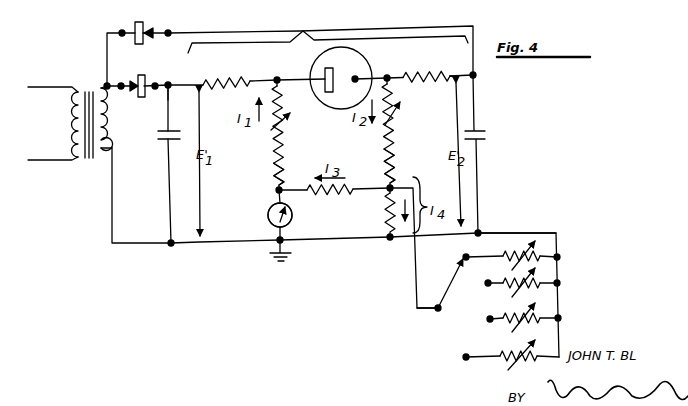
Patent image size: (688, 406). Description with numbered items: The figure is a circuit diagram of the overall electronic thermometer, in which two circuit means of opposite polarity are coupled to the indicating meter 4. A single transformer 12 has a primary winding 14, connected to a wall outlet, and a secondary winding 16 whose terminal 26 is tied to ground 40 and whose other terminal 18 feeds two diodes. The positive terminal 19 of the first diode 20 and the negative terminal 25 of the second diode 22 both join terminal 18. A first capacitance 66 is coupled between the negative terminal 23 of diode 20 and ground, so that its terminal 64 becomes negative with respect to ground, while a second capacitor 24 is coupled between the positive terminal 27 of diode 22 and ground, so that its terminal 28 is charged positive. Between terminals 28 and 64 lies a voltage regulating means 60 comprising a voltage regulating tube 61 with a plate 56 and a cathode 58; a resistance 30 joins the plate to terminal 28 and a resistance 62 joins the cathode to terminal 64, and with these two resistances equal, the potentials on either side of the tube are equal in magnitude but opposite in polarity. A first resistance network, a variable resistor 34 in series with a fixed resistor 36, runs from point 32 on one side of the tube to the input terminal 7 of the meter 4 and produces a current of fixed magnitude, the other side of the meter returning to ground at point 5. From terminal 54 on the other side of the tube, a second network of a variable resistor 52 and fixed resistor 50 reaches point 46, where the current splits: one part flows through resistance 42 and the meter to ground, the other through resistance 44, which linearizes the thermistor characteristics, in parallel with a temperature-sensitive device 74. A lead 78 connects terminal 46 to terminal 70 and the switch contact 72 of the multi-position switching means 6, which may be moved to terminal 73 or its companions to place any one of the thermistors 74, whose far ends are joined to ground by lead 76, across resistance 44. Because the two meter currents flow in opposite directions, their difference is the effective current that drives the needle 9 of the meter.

The meter 4 is at (268, 216).
The junction node 5 is at (282, 243).
The multi-position switching means 6 is at (445, 337).
The input terminal of the meter 7 is at (277, 191).
The needle 9 is at (292, 216).
The transformer 12 is at (84, 148).
The primary winding 14 is at (68, 133).
The secondary winding 16 is at (113, 130).
The terminal of the secondary winding 18 is at (104, 84).
The positive terminal of rectifying means 20 19 is at (120, 33).
The diode 20 is at (136, 22).
The diode 22 is at (141, 75).
The negative terminal of rectifying means 20 23 is at (170, 32).
The capacitor 24 is at (180, 140).
The negative terminal of rectifying means 22 25 is at (121, 84).
The terminal of the secondary winding 26 is at (171, 246).
The positive terminal of rectifying means 22 27 is at (157, 85).
The terminal of capacitance means 24 28 is at (169, 92).
The resistance 30 is at (245, 76).
The terminal 32 is at (276, 78).
The variable resistor 34 is at (272, 132).
The fixed resistor 36 is at (275, 164).
The ground 40 is at (273, 265).
The resistance 42 is at (355, 186).
The resistance 44 is at (385, 225).
The terminal 46 is at (385, 200).
The fixed resistor 50 is at (396, 152).
The variable resistor 52 is at (400, 117).
The terminal 54 is at (404, 74).
The plate 56 is at (329, 68).
The cathode 58 is at (355, 79).
The voltage regulating means 60 is at (303, 31).
The voltage regulating tube 61 is at (344, 84).
The resistance 62 is at (453, 75).
The terminal of capacitance means 66 64 is at (476, 75).
The capacitance 66 is at (486, 137).
The terminal 70 is at (436, 311).
The switch contact 72 is at (457, 278).
The terminal 73 is at (464, 256).
The temperature-sensitive device 74 is at (541, 255).
The lead 76 is at (512, 233).
The lead 78 is at (413, 278).